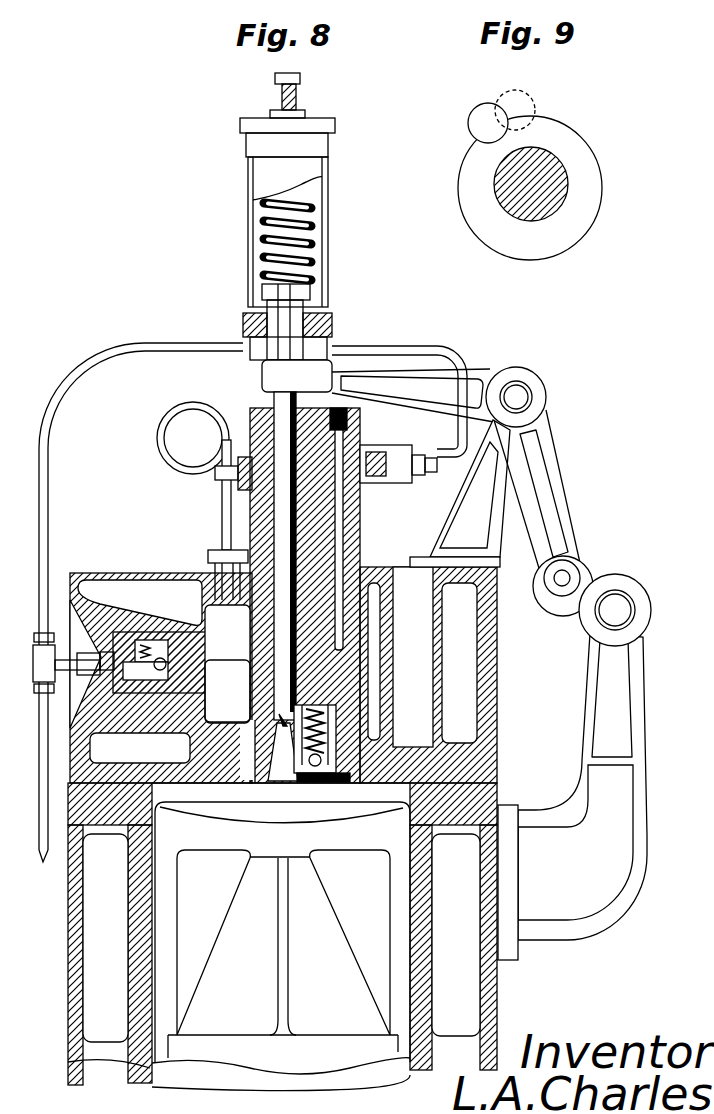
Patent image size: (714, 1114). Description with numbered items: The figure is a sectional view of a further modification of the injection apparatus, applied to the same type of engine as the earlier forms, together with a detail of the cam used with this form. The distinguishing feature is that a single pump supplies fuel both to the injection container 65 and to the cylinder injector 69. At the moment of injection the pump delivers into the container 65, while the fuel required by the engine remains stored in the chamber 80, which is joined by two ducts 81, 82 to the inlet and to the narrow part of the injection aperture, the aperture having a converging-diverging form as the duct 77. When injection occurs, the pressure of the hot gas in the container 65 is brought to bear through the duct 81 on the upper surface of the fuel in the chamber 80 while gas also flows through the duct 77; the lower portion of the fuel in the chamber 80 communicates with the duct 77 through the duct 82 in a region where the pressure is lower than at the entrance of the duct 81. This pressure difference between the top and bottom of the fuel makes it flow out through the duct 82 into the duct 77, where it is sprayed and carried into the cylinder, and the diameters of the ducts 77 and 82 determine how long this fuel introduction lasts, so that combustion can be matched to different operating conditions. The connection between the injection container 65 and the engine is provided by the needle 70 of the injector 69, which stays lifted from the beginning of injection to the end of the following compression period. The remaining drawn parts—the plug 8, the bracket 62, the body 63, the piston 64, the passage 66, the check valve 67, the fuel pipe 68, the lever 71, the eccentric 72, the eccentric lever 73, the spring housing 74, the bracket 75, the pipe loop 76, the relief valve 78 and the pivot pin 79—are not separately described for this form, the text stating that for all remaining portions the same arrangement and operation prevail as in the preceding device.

In FIG. 8, the nozzle plug 8 is at (355, 765).
In FIG. 8, the bracket on cylinder 62 is at (480, 830).
In FIG. 8, the cylinder body / head casting 63 is at (160, 592).
In FIG. 8, the piston 64 is at (335, 833).
In FIG. 8, the injection container 65 is at (230, 704).
In FIG. 8, the passage 66 is at (208, 656).
In FIG. 8, the check valve 67 is at (118, 618).
In FIG. 8, the fuel pipe 68 is at (415, 346).
In FIG. 8, the cylinder injector 69 is at (337, 612).
In FIG. 8, the needle 70 is at (270, 440).
In FIG. 8, the lever 71 is at (442, 392).
In FIG. 8, the eccentric 72 is at (556, 600).
In FIG. 9, the eccentric 72 is at (482, 118).
In FIG. 8, the eccentric lever arm 73 is at (636, 592).
In FIG. 9, the eccentric lever arm 73 is at (578, 212).
In FIG. 8, the spring housing 74 is at (266, 222).
In FIG. 8, the bracket 75 is at (355, 555).
In FIG. 8, the pipe loop 76 is at (220, 565).
In FIG. 8, the duct 77 is at (284, 765).
In FIG. 8, the relief valve 78 is at (378, 462).
In FIG. 8, the pivot pin 79 is at (340, 652).
In FIG. 8, the chamber 80 is at (368, 750).
In FIG. 8, the duct 81 is at (345, 712).
In FIG. 8, the duct 82 is at (352, 732).